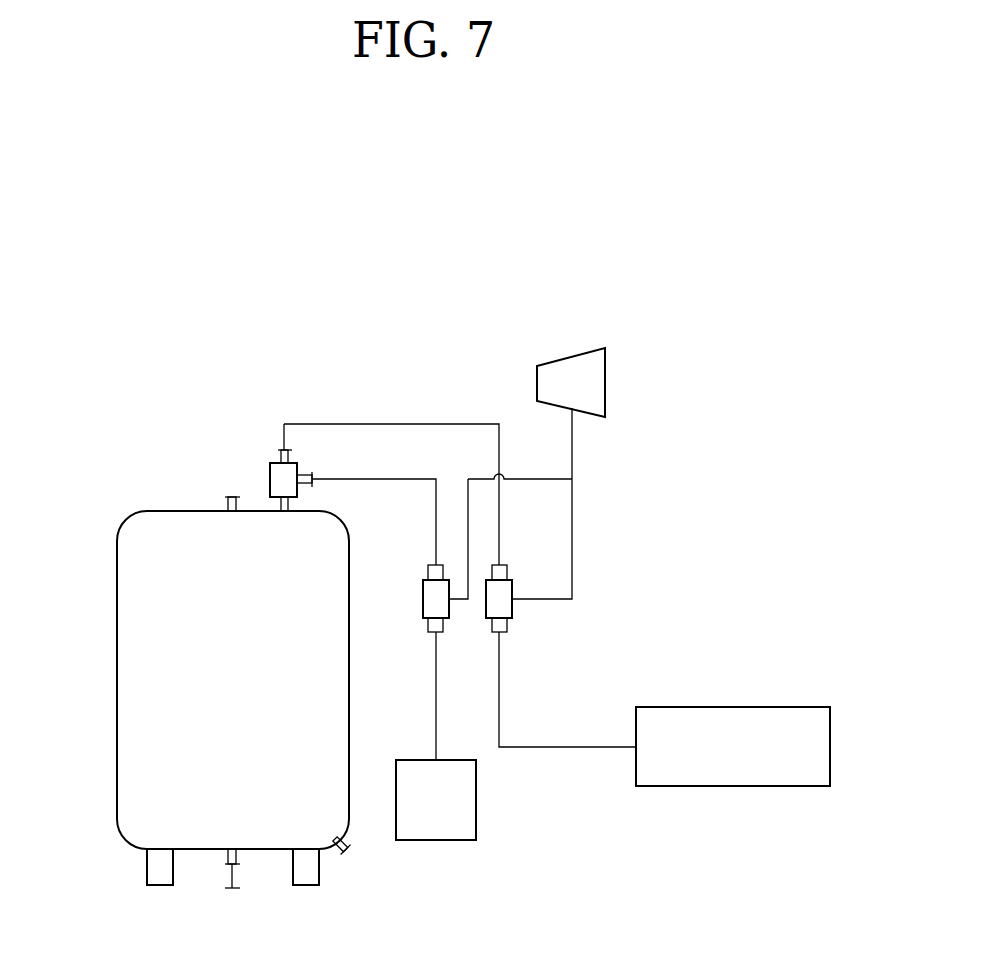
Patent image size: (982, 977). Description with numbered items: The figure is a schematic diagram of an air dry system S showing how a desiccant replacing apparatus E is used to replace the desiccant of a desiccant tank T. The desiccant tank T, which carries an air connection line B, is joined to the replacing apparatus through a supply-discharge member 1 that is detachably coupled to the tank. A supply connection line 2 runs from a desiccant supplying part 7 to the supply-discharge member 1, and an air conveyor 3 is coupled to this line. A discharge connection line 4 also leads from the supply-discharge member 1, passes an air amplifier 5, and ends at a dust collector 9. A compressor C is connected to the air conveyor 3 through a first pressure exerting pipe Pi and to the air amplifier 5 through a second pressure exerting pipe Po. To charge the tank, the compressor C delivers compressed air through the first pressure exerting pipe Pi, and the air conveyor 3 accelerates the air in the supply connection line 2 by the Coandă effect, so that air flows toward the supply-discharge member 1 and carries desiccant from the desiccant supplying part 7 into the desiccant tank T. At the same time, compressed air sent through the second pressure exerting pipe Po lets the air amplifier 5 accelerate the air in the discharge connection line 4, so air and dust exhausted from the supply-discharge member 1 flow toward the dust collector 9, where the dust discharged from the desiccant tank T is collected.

The desiccant tank T is at (114, 657).
The air connection line B is at (232, 877).
The supply-discharge member 1 is at (269, 457).
The supply connection line 2 is at (552, 743).
The air conveyor 3 is at (525, 603).
The discharge connection line 4 is at (432, 698).
The air amplifier 5 is at (455, 566).
The desiccant supplying part 7 is at (778, 702).
The dust collector 9 is at (481, 803).
The compressor C is at (569, 355).
The second pressure exerting pipe Po is at (549, 479).
The first pressure exerting pipe Pi is at (572, 512).
The air dry system S is at (716, 282).
The desiccant replacing apparatus E is at (758, 461).